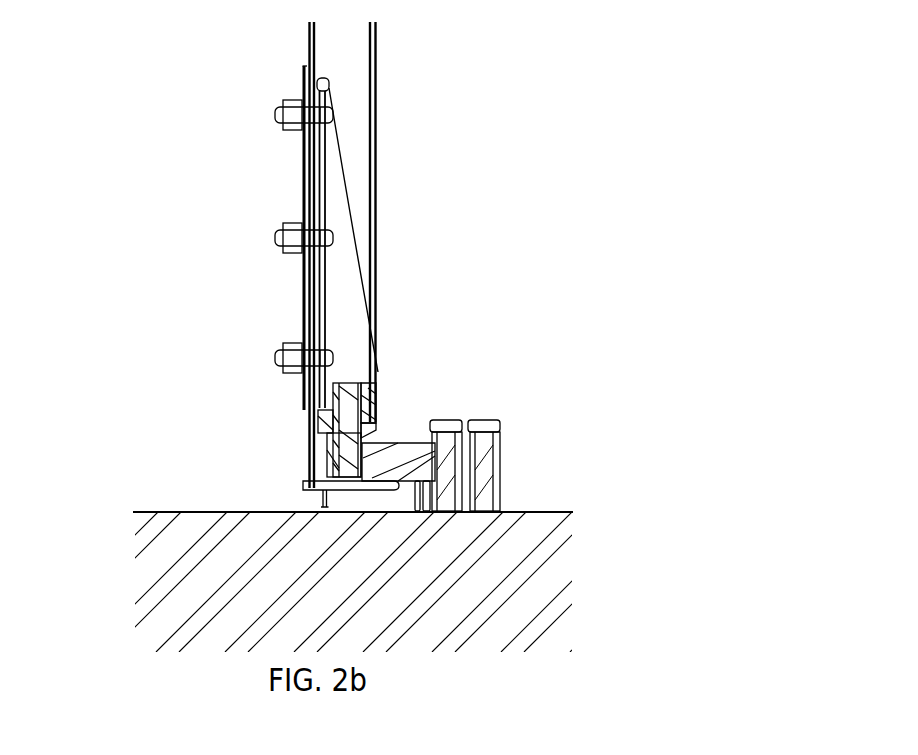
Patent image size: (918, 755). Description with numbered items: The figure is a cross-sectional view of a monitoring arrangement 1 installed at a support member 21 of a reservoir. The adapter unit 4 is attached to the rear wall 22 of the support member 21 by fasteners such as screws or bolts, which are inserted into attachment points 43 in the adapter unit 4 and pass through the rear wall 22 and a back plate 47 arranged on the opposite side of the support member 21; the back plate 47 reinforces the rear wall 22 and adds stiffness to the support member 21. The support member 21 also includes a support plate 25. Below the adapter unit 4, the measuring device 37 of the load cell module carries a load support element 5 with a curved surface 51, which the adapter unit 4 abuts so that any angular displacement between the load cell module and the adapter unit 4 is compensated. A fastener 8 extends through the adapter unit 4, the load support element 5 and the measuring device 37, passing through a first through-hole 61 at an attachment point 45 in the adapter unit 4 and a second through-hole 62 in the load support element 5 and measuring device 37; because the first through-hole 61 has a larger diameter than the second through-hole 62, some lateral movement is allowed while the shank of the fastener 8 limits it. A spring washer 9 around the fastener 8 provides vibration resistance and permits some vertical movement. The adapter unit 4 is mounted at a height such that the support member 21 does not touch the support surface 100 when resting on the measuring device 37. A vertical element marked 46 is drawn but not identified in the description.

The monitoring arrangement 1 is at (537, 160).
The adapter unit 4 is at (398, 283).
The load support element 5 is at (327, 444).
The fastener 8 is at (366, 392).
The spring washer 9 is at (360, 400).
The support member 21 is at (376, 208).
The rear wall 22 is at (311, 462).
The support plate 25 is at (303, 488).
The measuring device 37 is at (500, 464).
The attachment points 43 is at (318, 360).
The attachment point 45 is at (362, 414).
The connecting plate 46 is at (360, 233).
The back plate 47 is at (300, 276).
The curved surface 51 is at (332, 434).
The first through-hole 61 is at (362, 418).
The second through-hole 62 is at (363, 444).
The support surface 100 is at (530, 584).